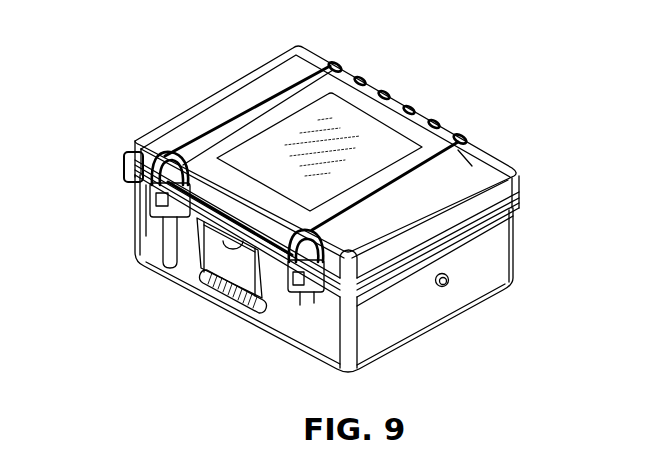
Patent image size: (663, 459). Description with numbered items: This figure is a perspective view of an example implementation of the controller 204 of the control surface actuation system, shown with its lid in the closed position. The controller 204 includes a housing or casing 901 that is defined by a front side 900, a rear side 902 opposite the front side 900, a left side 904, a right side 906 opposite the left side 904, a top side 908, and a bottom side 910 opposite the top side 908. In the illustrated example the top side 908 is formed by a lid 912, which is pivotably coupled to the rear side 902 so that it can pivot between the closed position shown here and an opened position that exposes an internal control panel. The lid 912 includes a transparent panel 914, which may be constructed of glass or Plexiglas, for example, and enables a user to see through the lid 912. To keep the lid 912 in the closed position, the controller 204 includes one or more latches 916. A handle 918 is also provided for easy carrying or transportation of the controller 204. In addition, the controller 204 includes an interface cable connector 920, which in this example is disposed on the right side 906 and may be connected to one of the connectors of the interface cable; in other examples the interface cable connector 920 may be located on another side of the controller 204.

The controller 204 is at (146, 67).
The housing 901 is at (203, 110).
The top side 908 is at (280, 78).
The transparent panel 914 is at (353, 120).
The lid 912 is at (462, 145).
The rear side 902 is at (513, 230).
The bottom side 910 is at (396, 348).
The right side 906 is at (473, 260).
The interface cable connector 920 is at (447, 284).
The left side 904 is at (130, 205).
The handle 918 is at (183, 289).
The front side 900 is at (237, 307).
The latch 916 is at (163, 200).